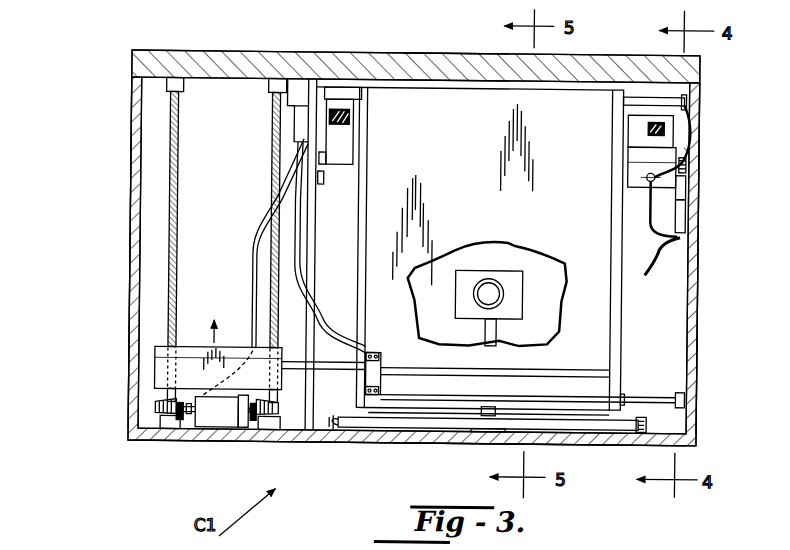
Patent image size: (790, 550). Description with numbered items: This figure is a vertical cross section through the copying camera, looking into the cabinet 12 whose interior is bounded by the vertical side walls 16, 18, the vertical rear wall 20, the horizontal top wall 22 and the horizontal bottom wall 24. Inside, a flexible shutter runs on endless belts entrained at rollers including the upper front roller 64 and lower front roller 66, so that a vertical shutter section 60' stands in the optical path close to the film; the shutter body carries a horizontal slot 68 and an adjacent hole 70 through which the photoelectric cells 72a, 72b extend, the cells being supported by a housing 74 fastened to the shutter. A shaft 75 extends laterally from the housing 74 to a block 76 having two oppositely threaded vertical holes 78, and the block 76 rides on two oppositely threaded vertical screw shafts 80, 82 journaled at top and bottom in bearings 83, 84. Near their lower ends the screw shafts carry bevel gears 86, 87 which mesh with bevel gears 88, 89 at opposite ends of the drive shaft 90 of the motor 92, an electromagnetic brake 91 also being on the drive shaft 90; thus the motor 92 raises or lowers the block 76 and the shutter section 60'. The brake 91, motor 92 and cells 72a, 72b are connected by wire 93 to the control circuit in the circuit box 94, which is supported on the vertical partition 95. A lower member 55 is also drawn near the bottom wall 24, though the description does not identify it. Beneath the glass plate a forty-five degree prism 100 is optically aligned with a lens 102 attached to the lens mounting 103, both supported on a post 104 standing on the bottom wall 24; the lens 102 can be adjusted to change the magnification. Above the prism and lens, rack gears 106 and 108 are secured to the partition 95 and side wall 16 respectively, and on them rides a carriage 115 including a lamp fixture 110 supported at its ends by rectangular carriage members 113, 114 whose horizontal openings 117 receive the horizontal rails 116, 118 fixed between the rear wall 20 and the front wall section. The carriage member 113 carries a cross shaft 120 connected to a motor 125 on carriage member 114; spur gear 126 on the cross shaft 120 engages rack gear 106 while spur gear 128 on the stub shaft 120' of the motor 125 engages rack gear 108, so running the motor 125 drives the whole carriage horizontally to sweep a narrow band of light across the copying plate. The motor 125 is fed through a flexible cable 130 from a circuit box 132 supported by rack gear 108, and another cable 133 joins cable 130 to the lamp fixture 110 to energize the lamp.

The cabinet 12 is at (701, 213).
The vertical side wall 16 is at (685, 239).
The vertical side wall 18 is at (134, 300).
The vertical rear wall 20 is at (152, 240).
The horizontal top wall 22 is at (236, 65).
The horizontal bottom wall 24 is at (330, 443).
The guide rail 55 is at (415, 430).
The vertical shutter section 60' is at (488, 249).
The upper front roller 64 is at (396, 66).
The lower front roller 66 is at (625, 395).
The horizontal slot 68 is at (590, 368).
The hole 70 is at (376, 352).
The photoelectric cell 72a is at (383, 390).
The photoelectric cell 72b is at (383, 359).
The housing 74 is at (372, 397).
The shaft 75 is at (340, 351).
The block 76 is at (160, 378).
The vertical threaded holes 78 is at (160, 355).
The screw shaft 80 is at (169, 197).
The screw shaft 82 is at (271, 186).
The bearing 83 is at (272, 89).
The bearing 84 is at (168, 441).
The bevel gear 86 is at (158, 412).
The bevel gear 87 is at (277, 421).
The bevel gear 88 is at (190, 416).
The bevel gear 89 is at (252, 422).
The drive shaft 90 is at (205, 431).
The electromagnetic brake 91 is at (243, 430).
The motor 92 is at (226, 429).
The wire 93 is at (252, 293).
The circuit box 94 is at (300, 121).
The vertical partition 95 is at (312, 90).
The 45° prism 100 is at (522, 288).
The lens 102 is at (485, 294).
The lens mounting 103 is at (503, 294).
The post 104 is at (497, 332).
The rack gear 106 is at (323, 186).
The rack gear 108 is at (687, 186).
The lamp fixture 110 is at (636, 95).
The carriage member 113 is at (346, 148).
The carriage member 114 is at (630, 116).
The carriage 115 is at (640, 172).
The horizontal rail 116 is at (341, 108).
The horizontal opening 117 is at (350, 117).
The horizontal rail 118 is at (648, 126).
The cross shaft 120 is at (608, 166).
The stub shaft 120' is at (719, 131).
The motor 125 is at (640, 185).
The spur gear 126 is at (327, 158).
The spur gear 128 is at (688, 162).
The flexible cable 130 is at (651, 219).
The circuit box 132 is at (687, 226).
The cable 133 is at (686, 116).